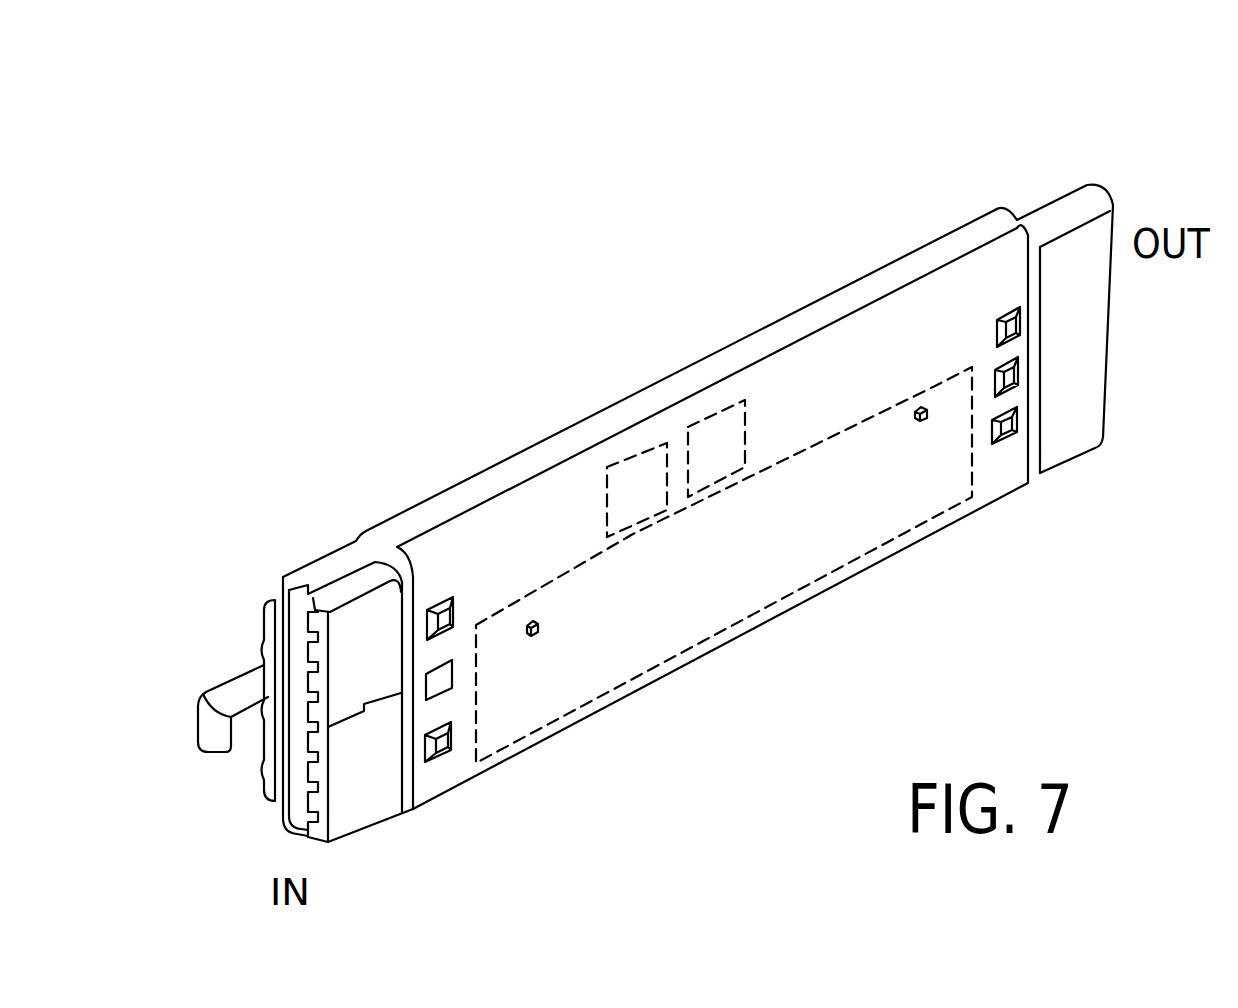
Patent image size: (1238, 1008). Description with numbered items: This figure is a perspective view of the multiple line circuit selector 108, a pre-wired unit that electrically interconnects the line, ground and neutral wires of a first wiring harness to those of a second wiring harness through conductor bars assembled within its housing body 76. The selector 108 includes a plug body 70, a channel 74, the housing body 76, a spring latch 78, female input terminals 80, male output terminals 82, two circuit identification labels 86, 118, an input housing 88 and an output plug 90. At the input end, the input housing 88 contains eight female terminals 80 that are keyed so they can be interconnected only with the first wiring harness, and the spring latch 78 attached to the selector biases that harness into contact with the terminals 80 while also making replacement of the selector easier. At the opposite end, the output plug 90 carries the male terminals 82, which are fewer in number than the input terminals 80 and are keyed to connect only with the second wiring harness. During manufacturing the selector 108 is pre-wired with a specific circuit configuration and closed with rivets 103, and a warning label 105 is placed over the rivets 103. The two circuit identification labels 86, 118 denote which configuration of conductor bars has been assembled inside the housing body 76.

The plug body 70 is at (1078, 207).
The channel 74 is at (442, 507).
The housing body 76 is at (327, 573).
The spring latch 78 is at (210, 732).
The female input terminals 80 is at (268, 797).
The male output terminals 82 is at (1108, 337).
The circuit identification label 86 is at (700, 440).
The input housing 88 is at (355, 793).
The output plug 90 is at (1067, 430).
The rivets 103 is at (920, 410).
The warning label 105 is at (845, 480).
The multiple line circuit selector 108 is at (757, 672).
The circuit identification label 118 is at (607, 468).